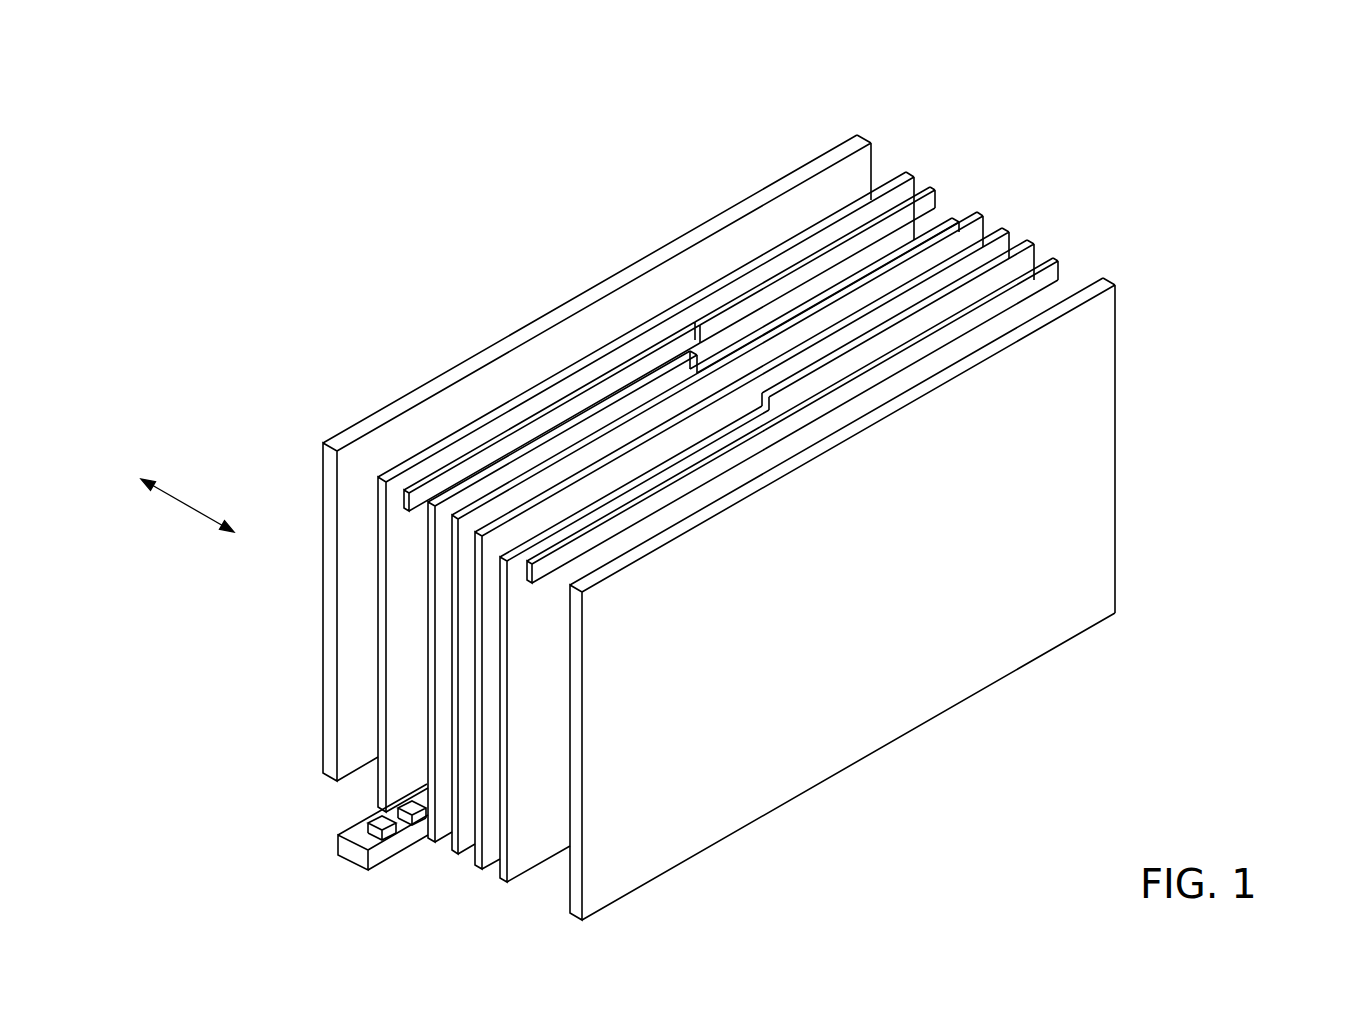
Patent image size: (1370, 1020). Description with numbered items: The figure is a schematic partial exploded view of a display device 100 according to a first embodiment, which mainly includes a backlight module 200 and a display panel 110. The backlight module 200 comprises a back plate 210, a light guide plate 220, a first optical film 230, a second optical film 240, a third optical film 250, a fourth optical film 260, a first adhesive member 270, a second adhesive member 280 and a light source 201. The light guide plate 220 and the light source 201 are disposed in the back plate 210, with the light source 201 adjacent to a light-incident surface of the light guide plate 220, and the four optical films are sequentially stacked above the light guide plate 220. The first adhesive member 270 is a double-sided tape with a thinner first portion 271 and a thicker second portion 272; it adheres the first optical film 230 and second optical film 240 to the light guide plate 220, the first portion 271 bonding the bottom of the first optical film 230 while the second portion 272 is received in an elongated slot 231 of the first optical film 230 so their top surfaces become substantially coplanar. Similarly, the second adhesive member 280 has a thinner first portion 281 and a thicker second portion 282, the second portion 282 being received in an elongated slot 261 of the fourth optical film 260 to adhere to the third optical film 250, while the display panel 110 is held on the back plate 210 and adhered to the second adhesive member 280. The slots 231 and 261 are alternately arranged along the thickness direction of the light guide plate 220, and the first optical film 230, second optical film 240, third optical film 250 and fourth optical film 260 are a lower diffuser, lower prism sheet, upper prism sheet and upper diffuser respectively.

The display device 100 is at (305, 263).
The display panel 110 is at (1092, 470).
The backlight module 200 is at (835, 62).
The light source 201 is at (345, 848).
The back plate 210 is at (860, 133).
The light guide plate 220 is at (897, 172).
The first optical film 230 is at (766, 459).
The elongated slot 231 is at (722, 345).
The second optical film 240 is at (995, 246).
The third optical film 250 is at (1017, 263).
The fourth optical film 260 is at (742, 479).
The elongated slot 261 is at (530, 545).
The first adhesive member 270 is at (722, 294).
The first portion 271 is at (543, 426).
The second portion 272 is at (766, 305).
The second adhesive member 280 is at (943, 452).
The first portion 281 is at (970, 320).
The second portion 282 is at (625, 510).